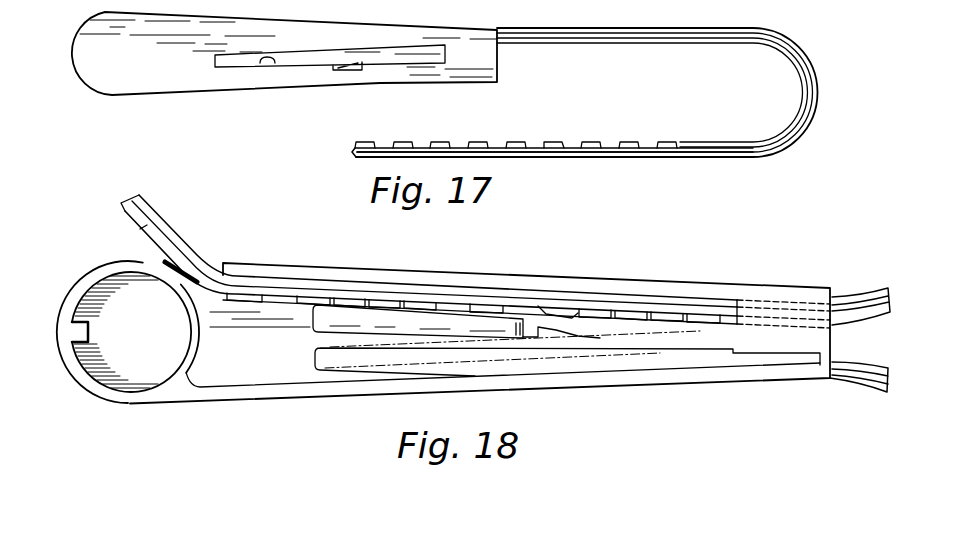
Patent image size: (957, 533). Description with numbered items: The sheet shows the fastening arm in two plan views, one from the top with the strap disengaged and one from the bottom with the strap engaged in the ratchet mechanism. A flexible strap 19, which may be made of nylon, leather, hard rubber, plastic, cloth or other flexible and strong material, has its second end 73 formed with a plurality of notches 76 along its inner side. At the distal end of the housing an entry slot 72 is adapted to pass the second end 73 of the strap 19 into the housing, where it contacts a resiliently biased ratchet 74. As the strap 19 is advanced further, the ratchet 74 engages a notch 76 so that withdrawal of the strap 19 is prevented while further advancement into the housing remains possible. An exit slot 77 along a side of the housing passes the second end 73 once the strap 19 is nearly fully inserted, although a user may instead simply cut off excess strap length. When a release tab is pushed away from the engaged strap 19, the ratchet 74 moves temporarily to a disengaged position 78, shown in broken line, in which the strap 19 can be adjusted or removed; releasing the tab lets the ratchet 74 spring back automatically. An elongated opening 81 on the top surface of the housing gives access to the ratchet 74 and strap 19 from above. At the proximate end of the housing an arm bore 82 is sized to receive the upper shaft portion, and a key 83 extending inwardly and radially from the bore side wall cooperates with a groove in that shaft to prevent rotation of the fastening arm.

In FIG. 17, the flexible strap 19 is at (797, 45).
In FIG. 18, the flexible strap 19 is at (864, 290).
In FIG. 18, the entry slot 72 is at (840, 293).
In FIG. 17, the second end of the strap 73 is at (353, 150).
In FIG. 18, the second end of the strap 73 is at (128, 200).
In FIG. 18, the ratchet 74 is at (556, 307).
In FIG. 17, the notches 76 is at (610, 146).
In FIG. 18, the notches 76 is at (571, 313).
In FIG. 18, the exit slot 77 is at (213, 261).
In FIG. 18, the disengaged position 78 is at (314, 361).
In FIG. 17, the elongated opening 81 is at (268, 64).
In FIG. 18, the arm bore 82 is at (114, 288).
In FIG. 18, the key 83 is at (89, 331).